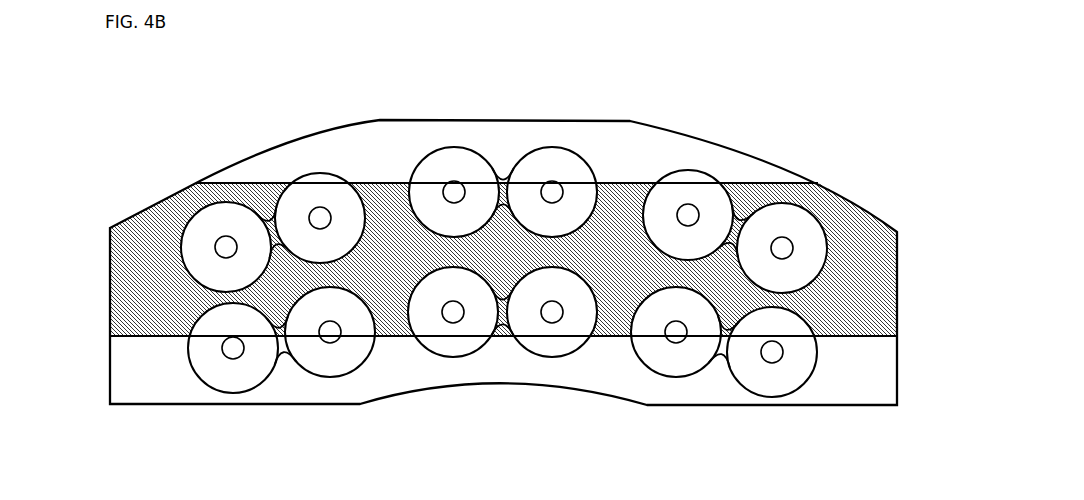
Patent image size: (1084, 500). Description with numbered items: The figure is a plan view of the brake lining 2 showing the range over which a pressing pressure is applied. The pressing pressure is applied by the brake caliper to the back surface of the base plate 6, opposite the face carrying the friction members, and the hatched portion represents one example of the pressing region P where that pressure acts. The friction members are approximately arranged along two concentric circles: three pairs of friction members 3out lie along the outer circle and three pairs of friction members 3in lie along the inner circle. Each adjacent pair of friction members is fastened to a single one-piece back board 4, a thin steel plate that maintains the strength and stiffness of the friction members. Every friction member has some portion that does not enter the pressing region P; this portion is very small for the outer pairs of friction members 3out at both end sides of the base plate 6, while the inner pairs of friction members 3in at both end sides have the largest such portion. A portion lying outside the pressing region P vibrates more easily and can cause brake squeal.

The brake lining 2 is at (750, 104).
The base plate 6 is at (650, 132).
The pressing region P is at (393, 183).
The friction members on the outer side 3out is at (217, 204).
The friction members on the inner side 3in is at (225, 385).
The back board 4 is at (265, 207).